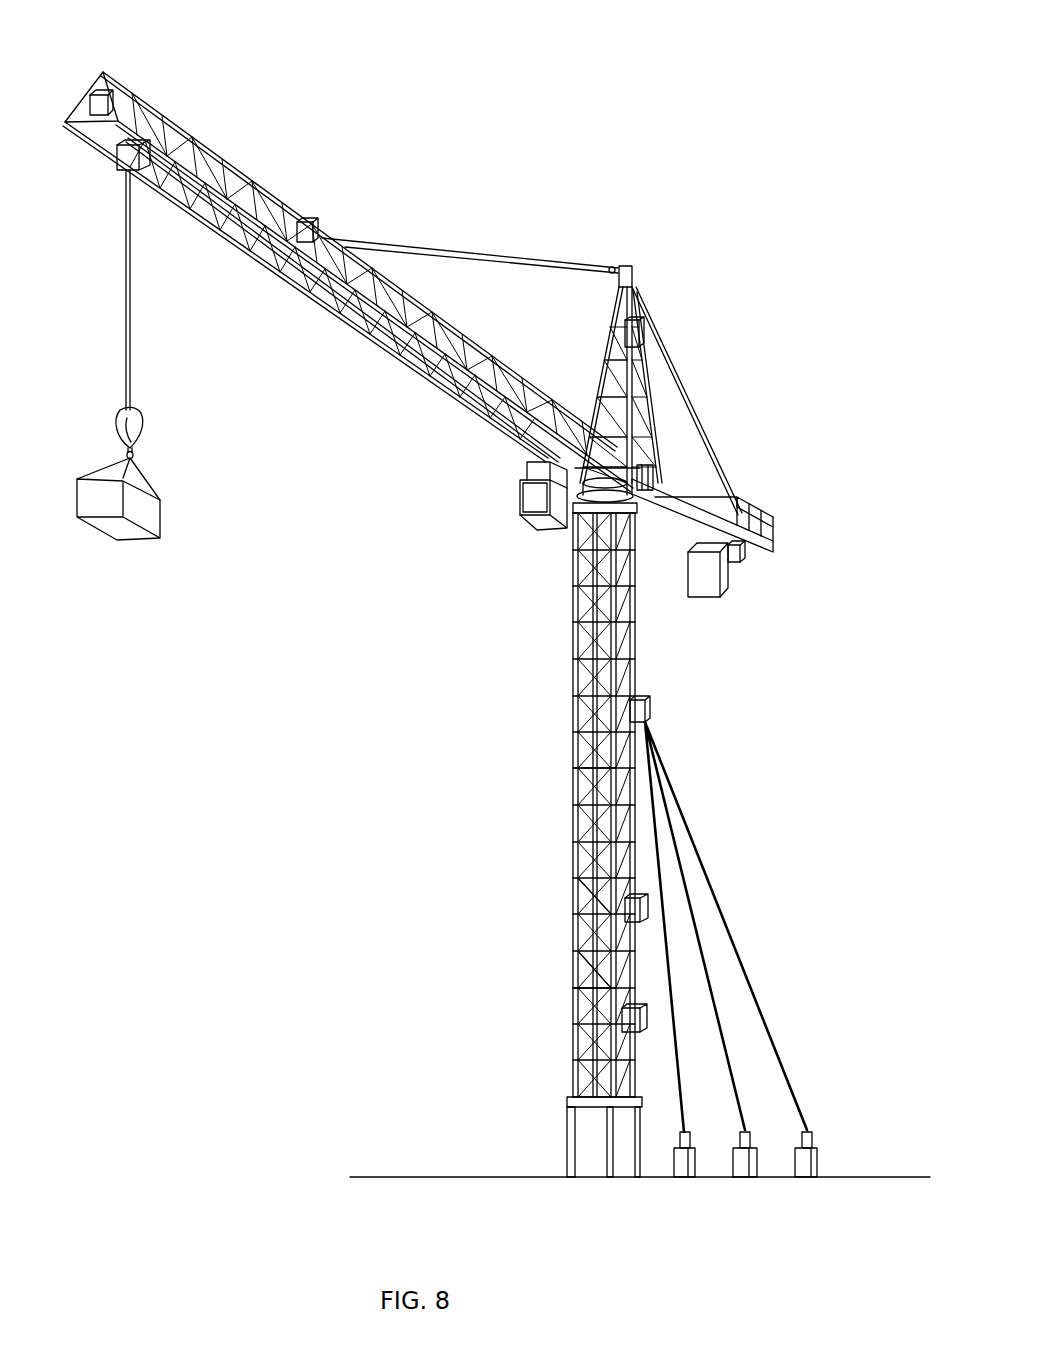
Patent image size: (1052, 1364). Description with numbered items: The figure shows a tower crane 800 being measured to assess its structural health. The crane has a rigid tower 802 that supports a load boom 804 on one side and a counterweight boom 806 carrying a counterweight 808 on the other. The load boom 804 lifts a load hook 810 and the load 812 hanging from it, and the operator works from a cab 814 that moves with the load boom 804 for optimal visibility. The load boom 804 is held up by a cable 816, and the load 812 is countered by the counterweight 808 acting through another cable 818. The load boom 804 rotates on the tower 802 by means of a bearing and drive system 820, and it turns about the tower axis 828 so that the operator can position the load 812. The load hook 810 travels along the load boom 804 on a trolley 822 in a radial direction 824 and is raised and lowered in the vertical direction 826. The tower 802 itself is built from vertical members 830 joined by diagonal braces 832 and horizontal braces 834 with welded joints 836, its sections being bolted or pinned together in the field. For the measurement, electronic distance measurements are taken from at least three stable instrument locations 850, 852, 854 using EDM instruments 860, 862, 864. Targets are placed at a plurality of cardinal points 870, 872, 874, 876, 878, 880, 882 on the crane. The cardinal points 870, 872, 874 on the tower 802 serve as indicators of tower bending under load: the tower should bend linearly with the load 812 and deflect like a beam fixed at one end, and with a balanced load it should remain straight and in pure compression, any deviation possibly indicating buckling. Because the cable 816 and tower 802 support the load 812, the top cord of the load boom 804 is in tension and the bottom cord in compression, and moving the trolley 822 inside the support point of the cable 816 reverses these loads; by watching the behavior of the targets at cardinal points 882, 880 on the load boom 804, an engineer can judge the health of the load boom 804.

The tower crane 800 is at (472, 643).
The rigid tower 802 is at (566, 658).
The load boom 804 is at (250, 138).
The counterweight boom 806 is at (694, 462).
The counterweight 808 is at (732, 578).
The load hook 810 is at (147, 432).
The load 812 is at (160, 527).
The cab 814 is at (520, 500).
The cable 816 is at (457, 246).
The cable 818 is at (672, 372).
The bearing and drive system 820 is at (642, 514).
The trolley 822 is at (133, 177).
The radial direction 824 is at (269, 291).
The vertical direction 826 is at (99, 387).
The tower axis 828 is at (636, 283).
The vertical members 830 is at (583, 890).
The diagonal braces 832 is at (587, 773).
The horizontal braces 834 is at (583, 963).
The welded joints 836 is at (580, 985).
The stable instrument location 850 is at (680, 1160).
The stable instrument location 852 is at (750, 1163).
The stable instrument location 854 is at (813, 1163).
The EDM instrument 860 is at (688, 1137).
The EDM instrument 862 is at (752, 1138).
The EDM instrument 864 is at (812, 1142).
The cardinal point 870 is at (652, 705).
The cardinal point 872 is at (650, 910).
The cardinal point 874 is at (646, 1022).
The cardinal point 876 is at (745, 552).
The cardinal point 878 is at (624, 333).
The cardinal point 880 is at (318, 220).
The cardinal point 882 is at (92, 103).